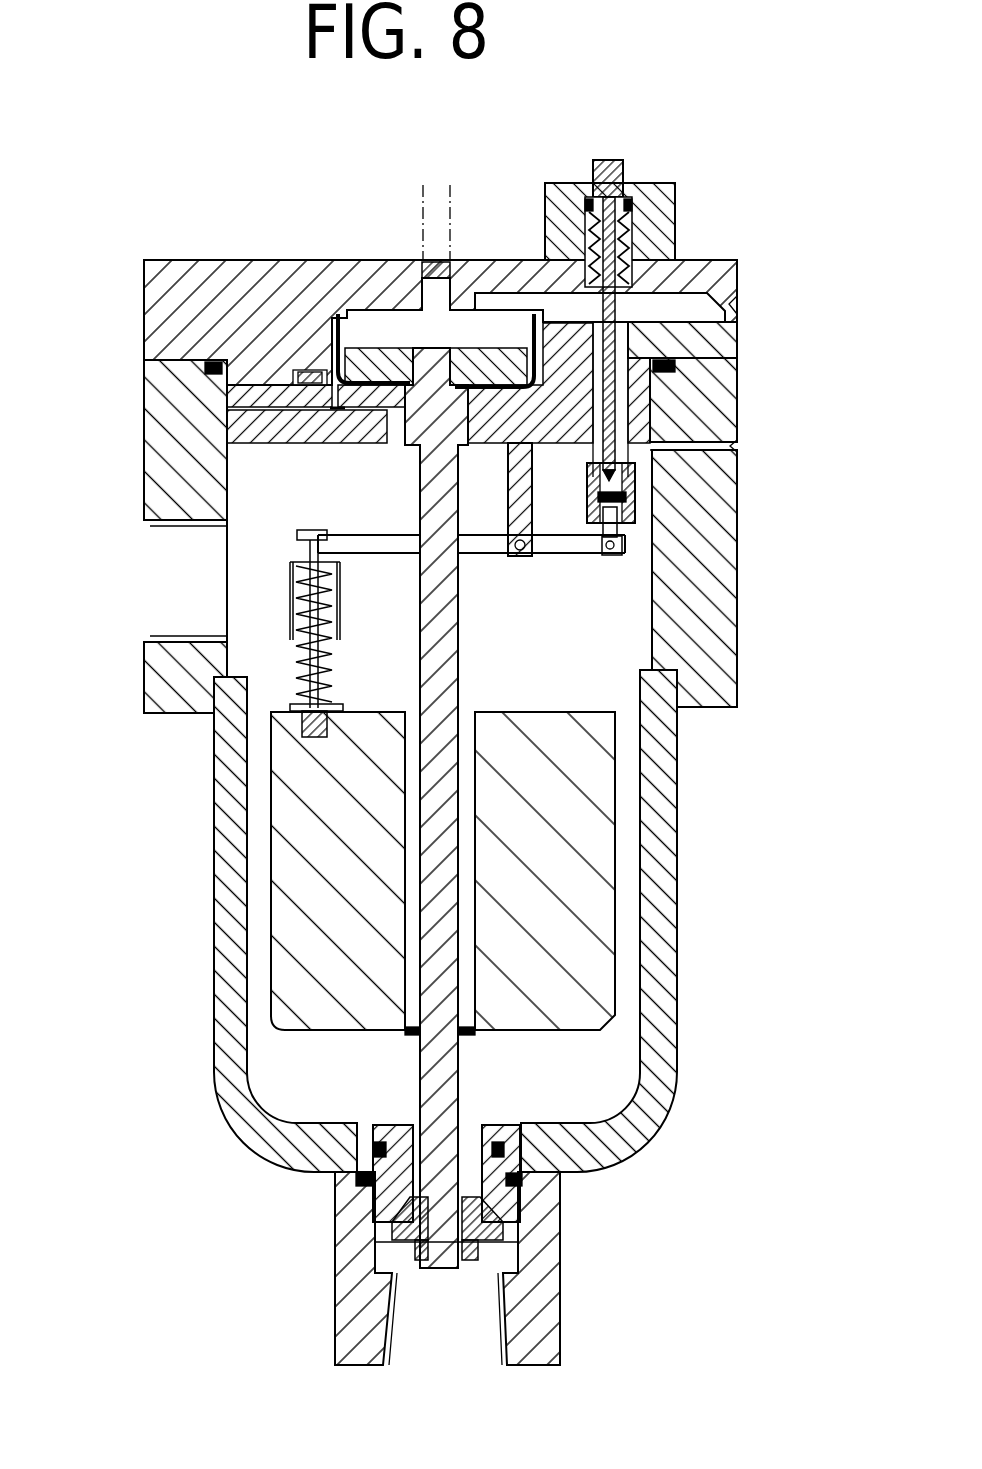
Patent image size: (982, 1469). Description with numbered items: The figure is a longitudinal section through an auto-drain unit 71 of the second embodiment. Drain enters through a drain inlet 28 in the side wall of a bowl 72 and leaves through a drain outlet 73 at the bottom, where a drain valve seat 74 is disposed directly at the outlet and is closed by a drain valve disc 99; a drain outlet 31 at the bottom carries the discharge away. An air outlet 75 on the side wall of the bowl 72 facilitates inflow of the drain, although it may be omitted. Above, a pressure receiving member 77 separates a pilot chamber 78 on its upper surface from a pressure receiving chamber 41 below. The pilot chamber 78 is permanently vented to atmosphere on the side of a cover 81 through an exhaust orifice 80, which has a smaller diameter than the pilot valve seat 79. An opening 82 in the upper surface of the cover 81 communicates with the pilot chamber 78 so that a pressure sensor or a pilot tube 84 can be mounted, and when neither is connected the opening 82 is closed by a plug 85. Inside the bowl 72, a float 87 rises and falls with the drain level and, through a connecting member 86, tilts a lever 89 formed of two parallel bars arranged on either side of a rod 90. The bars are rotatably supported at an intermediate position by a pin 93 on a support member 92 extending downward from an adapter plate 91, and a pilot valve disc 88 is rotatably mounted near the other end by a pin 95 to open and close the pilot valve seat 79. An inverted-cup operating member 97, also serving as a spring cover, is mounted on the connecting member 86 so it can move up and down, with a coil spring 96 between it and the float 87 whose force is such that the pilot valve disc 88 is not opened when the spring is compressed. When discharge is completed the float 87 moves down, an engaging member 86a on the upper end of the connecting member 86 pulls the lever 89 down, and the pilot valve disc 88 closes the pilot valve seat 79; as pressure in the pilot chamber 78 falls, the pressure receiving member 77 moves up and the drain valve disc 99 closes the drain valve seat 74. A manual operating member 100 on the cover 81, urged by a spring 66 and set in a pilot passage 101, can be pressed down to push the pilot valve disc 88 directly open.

The drain inlet 28 is at (150, 558).
The drain outlet 31 is at (552, 1317).
The pressure receiving chamber 41 is at (300, 405).
The spring 66 is at (630, 232).
The auto-drain unit 71 is at (293, 161).
The bowl 72 is at (664, 912).
The drain outlet 73 is at (500, 1197).
The drain valve seat 74 is at (407, 1207).
The air outlet 75 is at (738, 453).
The pressure receiving member 77 is at (337, 315).
The pilot chamber 78 is at (492, 302).
The pilot valve seat 79 is at (636, 480).
The exhaust orifice 80 is at (738, 303).
The cover 81 is at (167, 291).
The opening 82 is at (425, 262).
The pilot tube 84 is at (445, 185).
The plug 85 is at (452, 295).
The connecting member 86 is at (304, 693).
The engaging member 86a is at (316, 530).
The float 87 is at (600, 988).
The pilot valve disc 88 is at (628, 518).
The lever 89 is at (495, 553).
The rod 90 is at (440, 660).
The adapter plate 91 is at (227, 412).
The support member 92 is at (520, 510).
The pin 93 is at (523, 552).
The pin 95 is at (607, 556).
The coil spring 96 is at (300, 660).
The operating member 97 is at (343, 585).
The drain valve disc 99 is at (493, 1237).
The manual operating member 100 is at (608, 160).
The pilot passage 101 is at (700, 396).